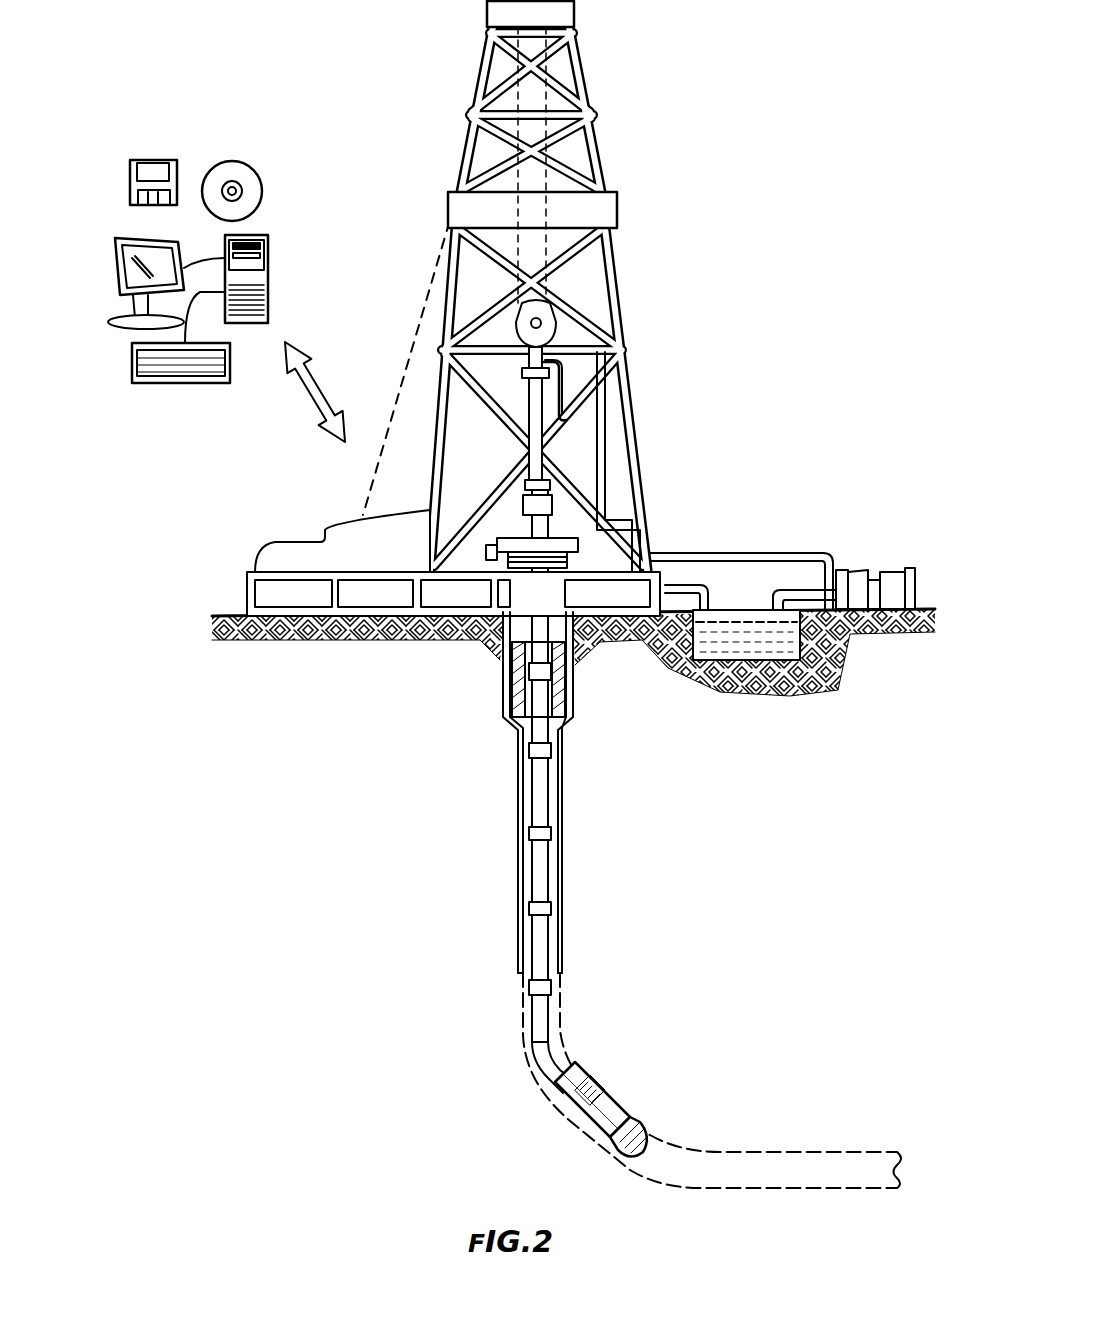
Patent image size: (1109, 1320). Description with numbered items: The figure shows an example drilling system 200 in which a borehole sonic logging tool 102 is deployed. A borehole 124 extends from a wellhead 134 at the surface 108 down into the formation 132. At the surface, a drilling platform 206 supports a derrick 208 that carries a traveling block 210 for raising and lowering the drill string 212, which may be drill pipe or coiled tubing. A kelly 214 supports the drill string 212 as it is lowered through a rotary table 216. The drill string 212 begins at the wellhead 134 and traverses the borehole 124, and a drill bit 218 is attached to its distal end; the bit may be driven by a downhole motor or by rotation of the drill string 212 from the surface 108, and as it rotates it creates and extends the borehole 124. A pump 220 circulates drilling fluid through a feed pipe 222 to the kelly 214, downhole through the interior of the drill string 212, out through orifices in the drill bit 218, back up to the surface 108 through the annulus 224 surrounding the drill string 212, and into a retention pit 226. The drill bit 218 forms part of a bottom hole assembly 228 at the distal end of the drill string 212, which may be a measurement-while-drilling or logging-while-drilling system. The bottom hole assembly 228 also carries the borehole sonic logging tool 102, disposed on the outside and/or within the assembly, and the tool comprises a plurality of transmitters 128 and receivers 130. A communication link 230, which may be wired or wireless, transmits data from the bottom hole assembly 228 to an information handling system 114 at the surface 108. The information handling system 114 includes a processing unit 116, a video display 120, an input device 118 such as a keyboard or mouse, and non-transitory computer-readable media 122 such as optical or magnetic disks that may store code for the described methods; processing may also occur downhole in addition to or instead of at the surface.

The drilling system 200 is at (792, 91).
The derrick 208 is at (587, 115).
The traveling block 210 is at (550, 320).
The kelly 214 is at (537, 394).
The rotary table 216 is at (560, 536).
The wellhead 134 is at (588, 553).
The feed pipe 222 is at (770, 552).
The pump 220 is at (853, 570).
The surface 108 is at (932, 606).
The drilling platform 206 is at (247, 592).
The retention pit 226 is at (750, 652).
The drill string 212 is at (552, 803).
The annulus 224 is at (518, 832).
The borehole 124 is at (550, 826).
The formation 132 is at (808, 926).
The transmitters 128 is at (580, 1082).
The borehole sonic logging tool 102 is at (608, 1100).
The drill bit 218 is at (642, 1130).
The bottom hole assembly 228 is at (555, 1102).
The receivers 130 is at (598, 1112).
The information handling system 114 is at (228, 258).
The non-transitory computer-readable media 122 is at (150, 160).
The video display 120 is at (114, 243).
The processing unit 116 is at (268, 260).
The input device 118 is at (168, 383).
The communication link 230 is at (315, 380).